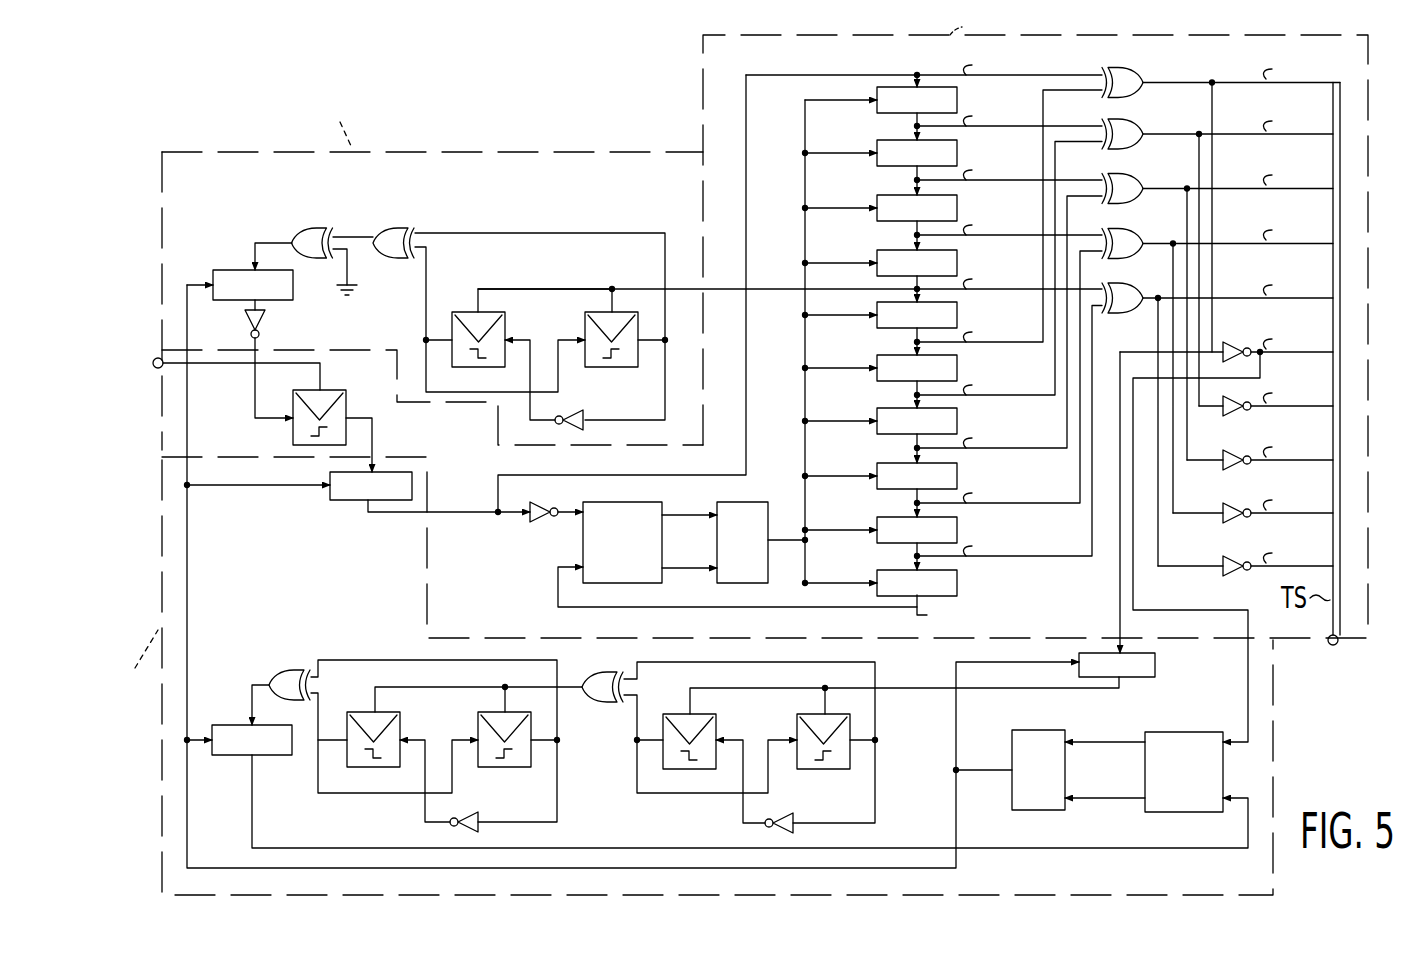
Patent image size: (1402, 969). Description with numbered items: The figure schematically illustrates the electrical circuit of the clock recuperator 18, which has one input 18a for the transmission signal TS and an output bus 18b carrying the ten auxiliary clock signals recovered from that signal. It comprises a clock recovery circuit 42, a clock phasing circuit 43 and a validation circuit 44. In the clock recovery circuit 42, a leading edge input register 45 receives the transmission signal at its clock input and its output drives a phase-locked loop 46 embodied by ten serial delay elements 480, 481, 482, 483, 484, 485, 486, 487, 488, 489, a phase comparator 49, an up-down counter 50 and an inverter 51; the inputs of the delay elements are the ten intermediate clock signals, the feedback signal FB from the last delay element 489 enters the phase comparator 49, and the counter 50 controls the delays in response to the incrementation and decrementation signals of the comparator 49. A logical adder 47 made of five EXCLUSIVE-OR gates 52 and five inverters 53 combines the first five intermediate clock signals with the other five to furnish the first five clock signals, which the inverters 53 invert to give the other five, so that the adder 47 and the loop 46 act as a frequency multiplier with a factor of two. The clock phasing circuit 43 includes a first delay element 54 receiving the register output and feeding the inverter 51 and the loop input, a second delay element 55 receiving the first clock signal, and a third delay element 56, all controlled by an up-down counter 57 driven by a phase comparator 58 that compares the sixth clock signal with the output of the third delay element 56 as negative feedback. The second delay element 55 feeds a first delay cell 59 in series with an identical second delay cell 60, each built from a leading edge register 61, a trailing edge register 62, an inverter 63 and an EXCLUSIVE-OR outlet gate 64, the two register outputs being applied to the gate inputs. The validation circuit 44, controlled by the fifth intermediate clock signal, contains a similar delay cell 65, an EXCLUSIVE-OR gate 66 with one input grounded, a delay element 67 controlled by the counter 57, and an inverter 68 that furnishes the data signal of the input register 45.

The clock recuperator 18 is at (514, 90).
The input 18a is at (158, 368).
The output bus 18b is at (1330, 646).
The clock recovery circuit 42 is at (703, 108).
The clock phasing circuit 43 is at (163, 563).
The validation circuit 44 is at (472, 152).
The leading edge input register 45 is at (338, 394).
The phase-locked loop 46 is at (508, 566).
The logical adder 47 is at (1067, 567).
The delay element 480 is at (880, 80).
The delay element 481 is at (879, 143).
The delay element 482 is at (879, 197).
The delay element 483 is at (879, 252).
The delay element 484 is at (880, 315).
The delay element 485 is at (879, 357).
The delay element 486 is at (879, 410).
The delay element 487 is at (879, 465).
The delay element 488 is at (879, 519).
The delay element 489 is at (879, 572).
The phase comparator 49 is at (585, 551).
The up-down counter 50 is at (757, 502).
The inverter 51 is at (545, 492).
The EXCLUSIVE-OR gates 52 is at (1129, 72).
The inverters 53 is at (1235, 348).
The first delay element 54 is at (349, 502).
The second delay element 55 is at (1157, 663).
The third delay element 56 is at (235, 700).
The up-down counter 57 is at (1026, 810).
The phase comparator 58 is at (1167, 812).
The first delay cell 59 is at (759, 754).
The second delay cell 60 is at (574, 790).
The leading edge register 61 is at (805, 726).
The trailing edge register 62 is at (680, 698).
The inverter 63 is at (789, 819).
The EXCLUSIVE-OR outlet gate 64 is at (616, 704).
The delay cell 65 is at (597, 223).
The EXCLUSIVE-OR gate 66 is at (299, 229).
The delay element 67 is at (234, 266).
The inverter 68 is at (270, 322).